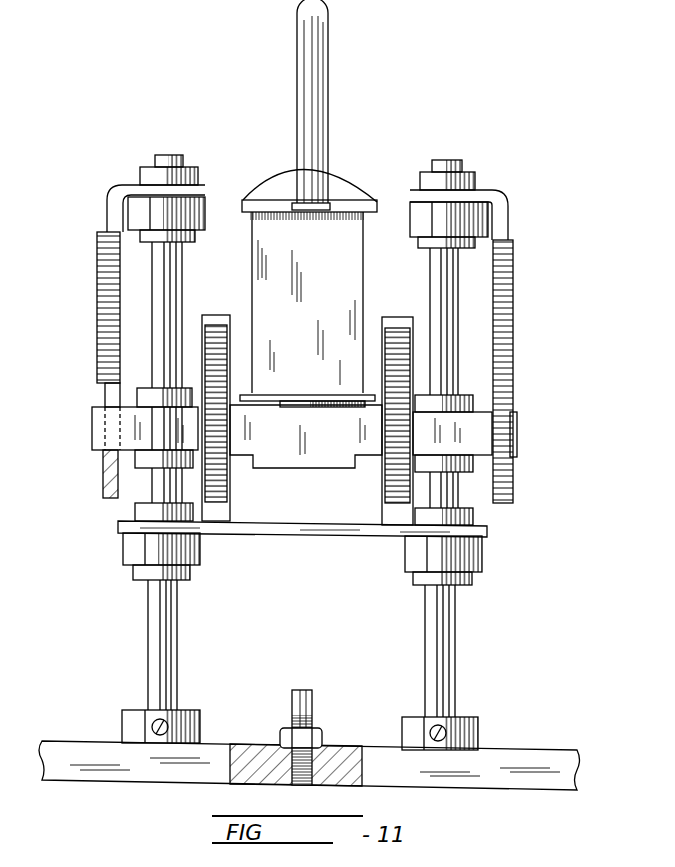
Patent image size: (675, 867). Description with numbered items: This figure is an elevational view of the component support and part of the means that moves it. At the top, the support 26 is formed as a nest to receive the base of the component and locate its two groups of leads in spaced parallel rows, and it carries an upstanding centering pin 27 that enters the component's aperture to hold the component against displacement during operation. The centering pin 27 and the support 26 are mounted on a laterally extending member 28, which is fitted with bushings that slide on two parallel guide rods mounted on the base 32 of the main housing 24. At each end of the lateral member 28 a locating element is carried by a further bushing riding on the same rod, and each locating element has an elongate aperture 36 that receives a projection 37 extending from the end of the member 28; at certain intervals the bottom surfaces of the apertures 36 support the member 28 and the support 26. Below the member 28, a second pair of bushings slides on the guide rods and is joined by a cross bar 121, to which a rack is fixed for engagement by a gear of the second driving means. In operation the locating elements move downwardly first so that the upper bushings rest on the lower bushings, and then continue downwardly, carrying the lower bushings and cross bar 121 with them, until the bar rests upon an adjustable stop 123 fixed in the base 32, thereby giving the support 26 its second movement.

The main housing 24 is at (284, 794).
The support 26 is at (363, 206).
The centering pin 27 is at (306, 61).
The member 28 is at (299, 462).
The base 32 is at (72, 776).
The elongate apertures 36 is at (104, 402).
The projections 37 is at (101, 446).
The cross bar 121 is at (372, 531).
The adjustable stop 123 is at (312, 696).